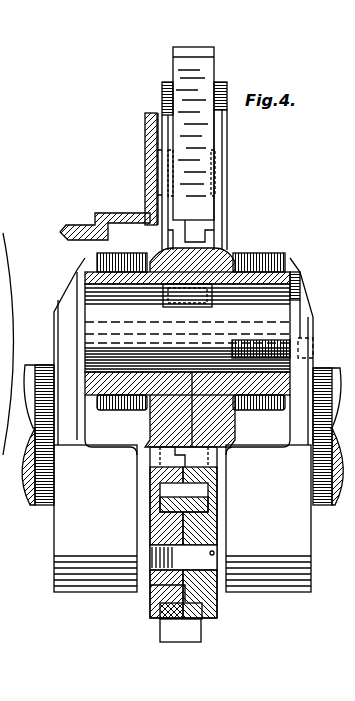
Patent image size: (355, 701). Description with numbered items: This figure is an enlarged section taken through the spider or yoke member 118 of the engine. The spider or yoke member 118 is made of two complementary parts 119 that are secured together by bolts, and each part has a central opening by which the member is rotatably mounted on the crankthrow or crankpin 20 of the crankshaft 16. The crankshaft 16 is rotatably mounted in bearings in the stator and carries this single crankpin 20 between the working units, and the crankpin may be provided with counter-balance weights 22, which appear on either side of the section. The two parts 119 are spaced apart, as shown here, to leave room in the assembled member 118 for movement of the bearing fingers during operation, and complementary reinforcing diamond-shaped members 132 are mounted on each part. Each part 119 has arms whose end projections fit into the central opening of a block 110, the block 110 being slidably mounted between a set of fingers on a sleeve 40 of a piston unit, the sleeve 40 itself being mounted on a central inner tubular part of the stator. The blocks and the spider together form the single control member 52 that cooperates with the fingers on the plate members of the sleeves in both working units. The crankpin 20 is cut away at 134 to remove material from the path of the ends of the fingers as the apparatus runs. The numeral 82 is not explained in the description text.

The block 110 is at (193, 54).
The control member 52 is at (229, 71).
The bracket plate 82 is at (145, 130).
The sleeve 40 is at (113, 213).
The complementary parts 119 is at (165, 170).
The reinforcing diamond-shaped members 132 is at (204, 228).
The spider or yoke member 118 is at (242, 246).
The crankthrow or crankpin 20 is at (199, 328).
The cut away portion of crankpin 134 is at (216, 304).
The counter-balance weights 22 is at (182, 518).
The crankshaft 16 is at (42, 498).